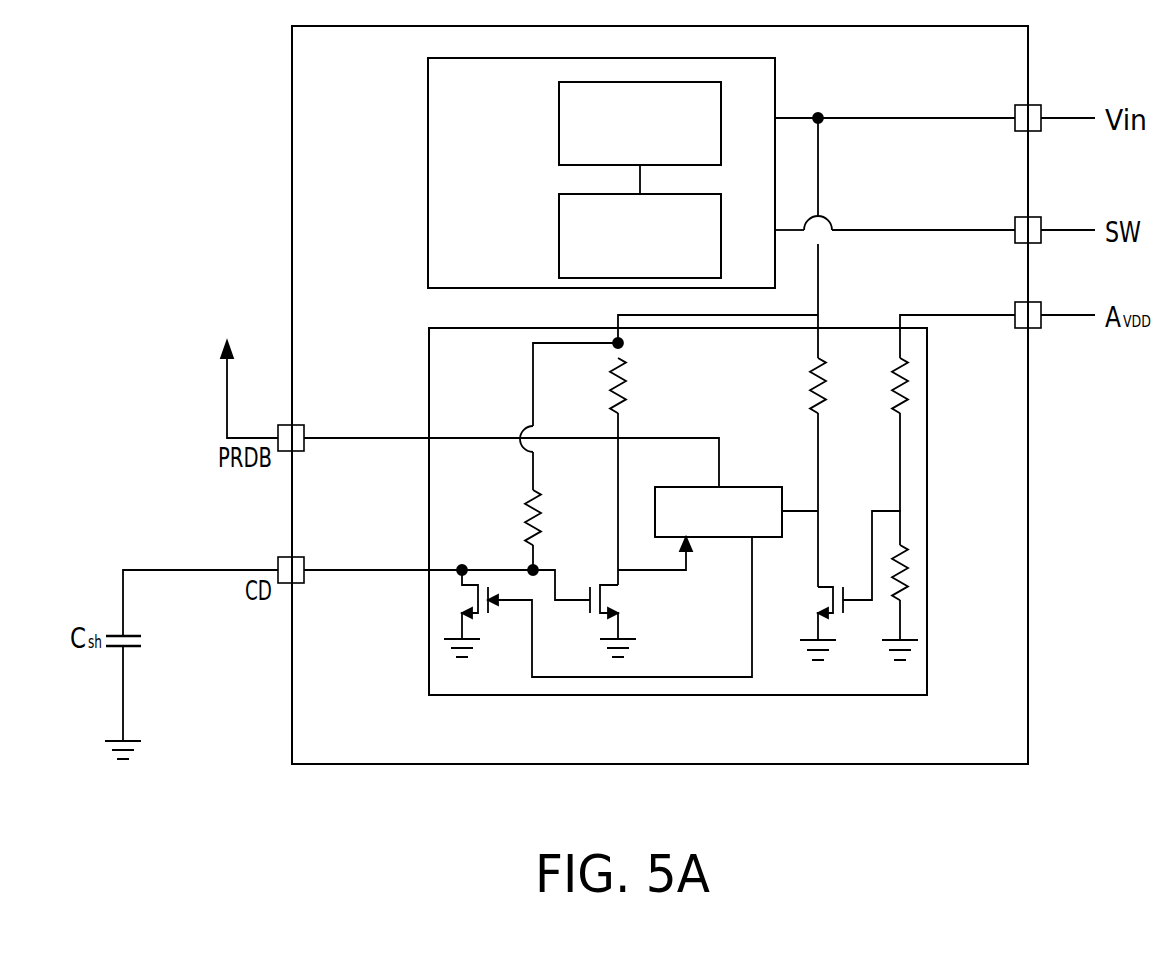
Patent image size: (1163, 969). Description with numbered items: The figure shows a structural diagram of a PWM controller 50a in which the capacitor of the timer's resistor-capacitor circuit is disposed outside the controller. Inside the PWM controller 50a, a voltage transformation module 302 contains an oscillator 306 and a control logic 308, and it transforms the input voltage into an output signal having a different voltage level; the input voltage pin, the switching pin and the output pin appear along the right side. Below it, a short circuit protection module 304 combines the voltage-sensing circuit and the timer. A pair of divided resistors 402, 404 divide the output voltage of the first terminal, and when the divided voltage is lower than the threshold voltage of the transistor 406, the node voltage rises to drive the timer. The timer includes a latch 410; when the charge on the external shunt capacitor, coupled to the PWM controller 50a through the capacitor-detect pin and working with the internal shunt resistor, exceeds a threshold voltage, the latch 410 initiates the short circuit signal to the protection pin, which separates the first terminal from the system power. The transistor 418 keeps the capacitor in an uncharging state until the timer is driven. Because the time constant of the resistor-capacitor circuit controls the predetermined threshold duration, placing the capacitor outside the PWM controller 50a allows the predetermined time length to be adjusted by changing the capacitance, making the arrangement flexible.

The PWM controller 50a is at (1010, 757).
The voltage transformation module 302 is at (556, 173).
The short circuit protection module 304 is at (428, 367).
The oscillator 306 is at (559, 122).
The control logic 308 is at (559, 232).
The divided resistor 402 is at (908, 383).
The divided resistor 404 is at (908, 570).
The transistor 406 is at (822, 587).
The latch 410 is at (764, 487).
The transistor 418 is at (490, 612).